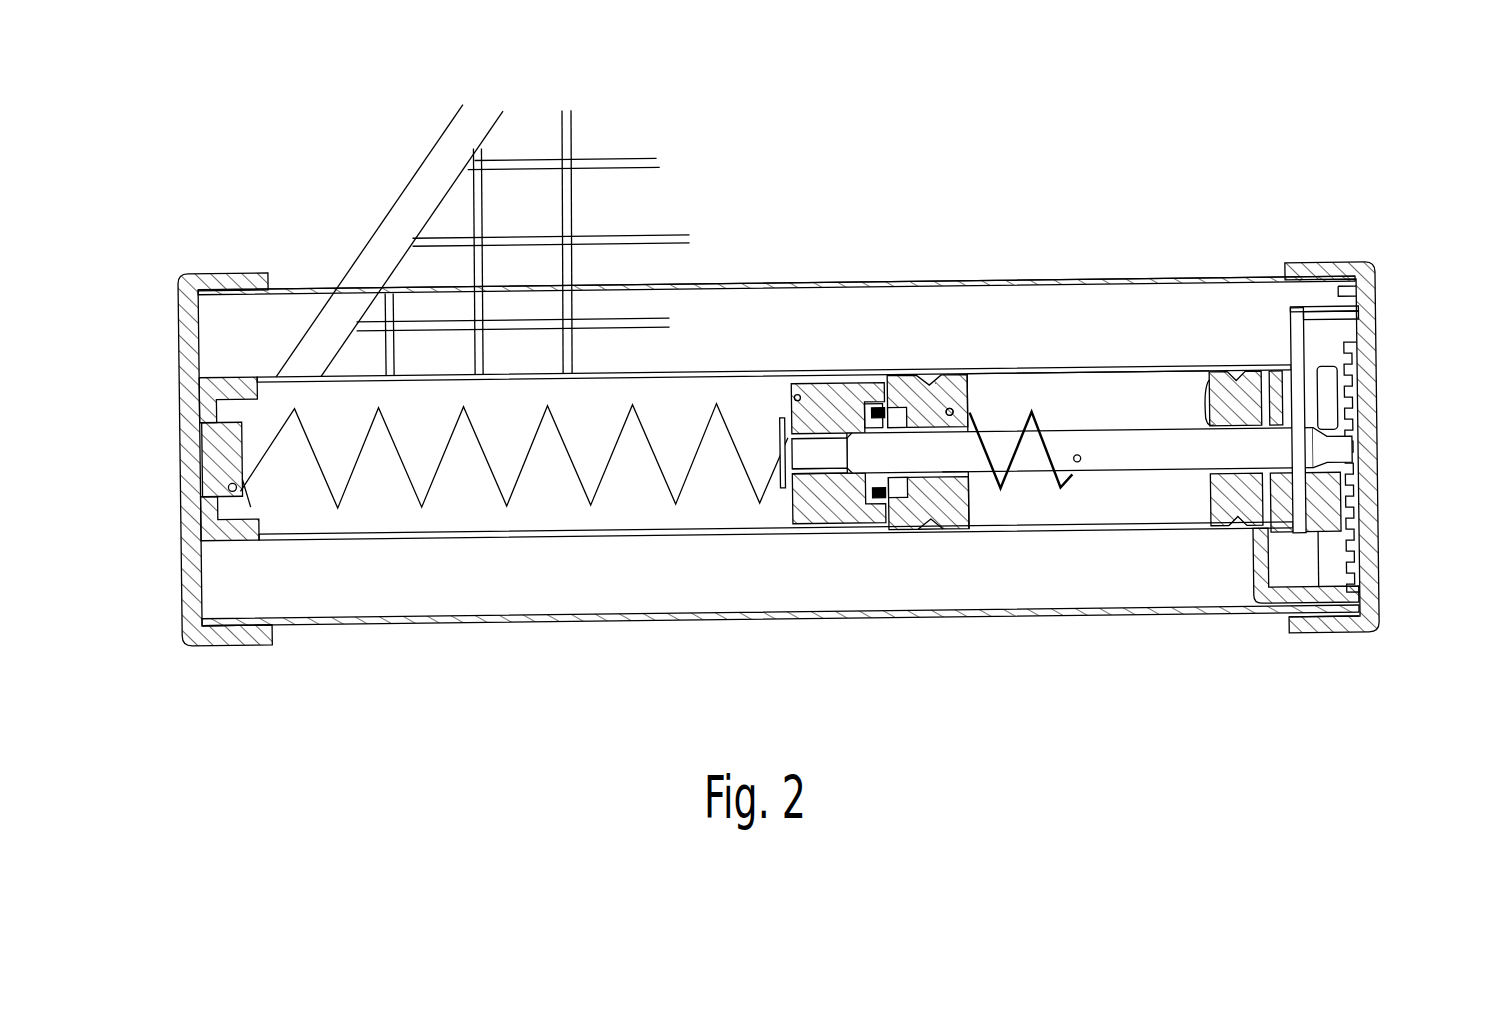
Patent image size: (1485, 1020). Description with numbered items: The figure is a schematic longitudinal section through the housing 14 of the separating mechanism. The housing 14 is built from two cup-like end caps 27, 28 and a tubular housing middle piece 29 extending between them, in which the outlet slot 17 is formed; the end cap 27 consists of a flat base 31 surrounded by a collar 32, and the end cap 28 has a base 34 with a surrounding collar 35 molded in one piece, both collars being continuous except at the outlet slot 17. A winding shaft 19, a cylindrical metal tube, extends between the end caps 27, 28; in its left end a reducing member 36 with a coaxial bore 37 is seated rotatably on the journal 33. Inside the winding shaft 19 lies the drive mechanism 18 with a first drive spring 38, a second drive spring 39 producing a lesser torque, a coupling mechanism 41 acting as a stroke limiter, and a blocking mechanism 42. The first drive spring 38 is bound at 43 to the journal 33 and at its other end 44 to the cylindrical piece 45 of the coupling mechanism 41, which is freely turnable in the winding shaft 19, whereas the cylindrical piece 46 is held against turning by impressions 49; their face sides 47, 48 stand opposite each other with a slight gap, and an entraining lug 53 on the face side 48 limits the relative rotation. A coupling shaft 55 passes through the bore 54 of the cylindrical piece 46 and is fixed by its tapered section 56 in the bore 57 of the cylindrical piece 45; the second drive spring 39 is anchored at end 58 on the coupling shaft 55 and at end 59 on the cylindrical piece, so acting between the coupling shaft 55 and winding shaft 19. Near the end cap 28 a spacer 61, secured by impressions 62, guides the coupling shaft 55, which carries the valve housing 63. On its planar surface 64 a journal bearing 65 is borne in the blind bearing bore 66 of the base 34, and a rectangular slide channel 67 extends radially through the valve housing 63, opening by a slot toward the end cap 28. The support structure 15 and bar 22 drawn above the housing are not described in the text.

The housing 14 is at (356, 677).
The support structure 15 is at (407, 151).
The outlet slot 17 is at (308, 278).
The drive mechanism 18 is at (987, 317).
The winding shaft 19 is at (777, 377).
The bar 22 is at (392, 207).
The end cap 27 is at (206, 511).
The end cap 28 is at (1364, 427).
The tubular housing middle piece 29 is at (606, 627).
The base 31 is at (180, 560).
The collar 32 is at (235, 641).
The journal 33 is at (222, 457).
The base 34 is at (1371, 597).
The collar 35 is at (1325, 641).
The reducing member 36 is at (236, 523).
The bore 37 is at (202, 417).
The first drive spring 38 is at (494, 509).
The second drive spring 39 is at (1058, 500).
The coupling mechanism 41 is at (801, 506).
The blocking mechanism 42 is at (1273, 328).
The spring end 43 is at (240, 490).
The spring end 44 is at (801, 405).
The cylindrical piece 45 is at (823, 521).
The cylindrical piece 46 is at (956, 530).
The face side 47 is at (876, 410).
The face side 48 is at (907, 399).
The impressions 49 is at (934, 545).
The entraining lug 53 is at (953, 419).
The bore 54 is at (960, 497).
The coupling shaft 55 is at (1110, 459).
The tapered section 56 is at (805, 459).
The bore 57 is at (808, 475).
The spring end 58 is at (1078, 472).
The spring end 59 is at (954, 421).
The spacer 61 is at (1218, 523).
The impressions 62 is at (1226, 387).
The valve housing 63 is at (1338, 511).
The planar surface 64 is at (1346, 399).
The journal bearing 65 is at (1363, 444).
The bearing bore 66 is at (1358, 479).
The slide channel 67 is at (1300, 533).